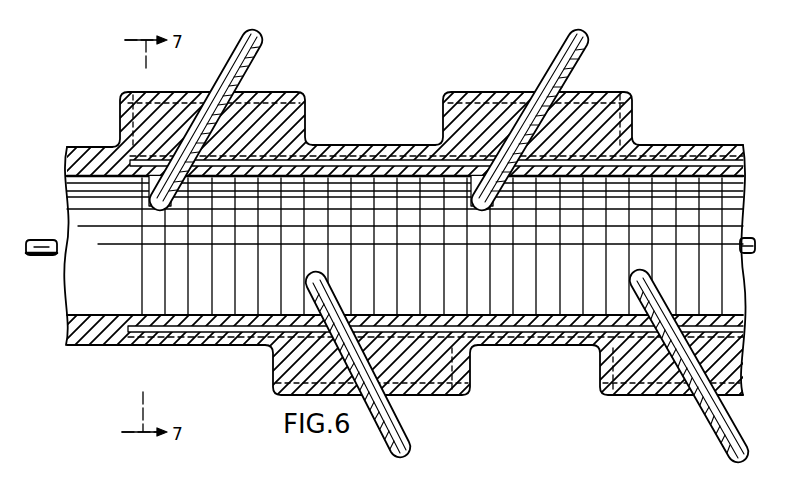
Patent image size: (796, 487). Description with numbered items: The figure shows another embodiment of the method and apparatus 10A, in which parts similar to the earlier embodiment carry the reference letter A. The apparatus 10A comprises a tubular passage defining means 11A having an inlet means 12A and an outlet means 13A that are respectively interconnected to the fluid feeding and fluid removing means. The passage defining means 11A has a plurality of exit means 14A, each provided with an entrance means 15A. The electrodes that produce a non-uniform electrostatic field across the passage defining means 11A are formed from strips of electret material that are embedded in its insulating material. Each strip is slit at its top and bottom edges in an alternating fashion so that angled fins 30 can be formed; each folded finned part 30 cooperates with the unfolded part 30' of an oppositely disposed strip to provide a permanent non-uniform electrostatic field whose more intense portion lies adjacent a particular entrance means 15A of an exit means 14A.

The method and apparatus 10A is at (442, 68).
The tubular passage defining means 11A is at (657, 148).
The inlet means 12A is at (46, 240).
The outlet means 13A is at (748, 253).
The exit means 14A is at (260, 56).
The entrance means 15A is at (150, 202).
The angled fins 30 is at (427, 245).
The unfolded part 30' is at (435, 250).